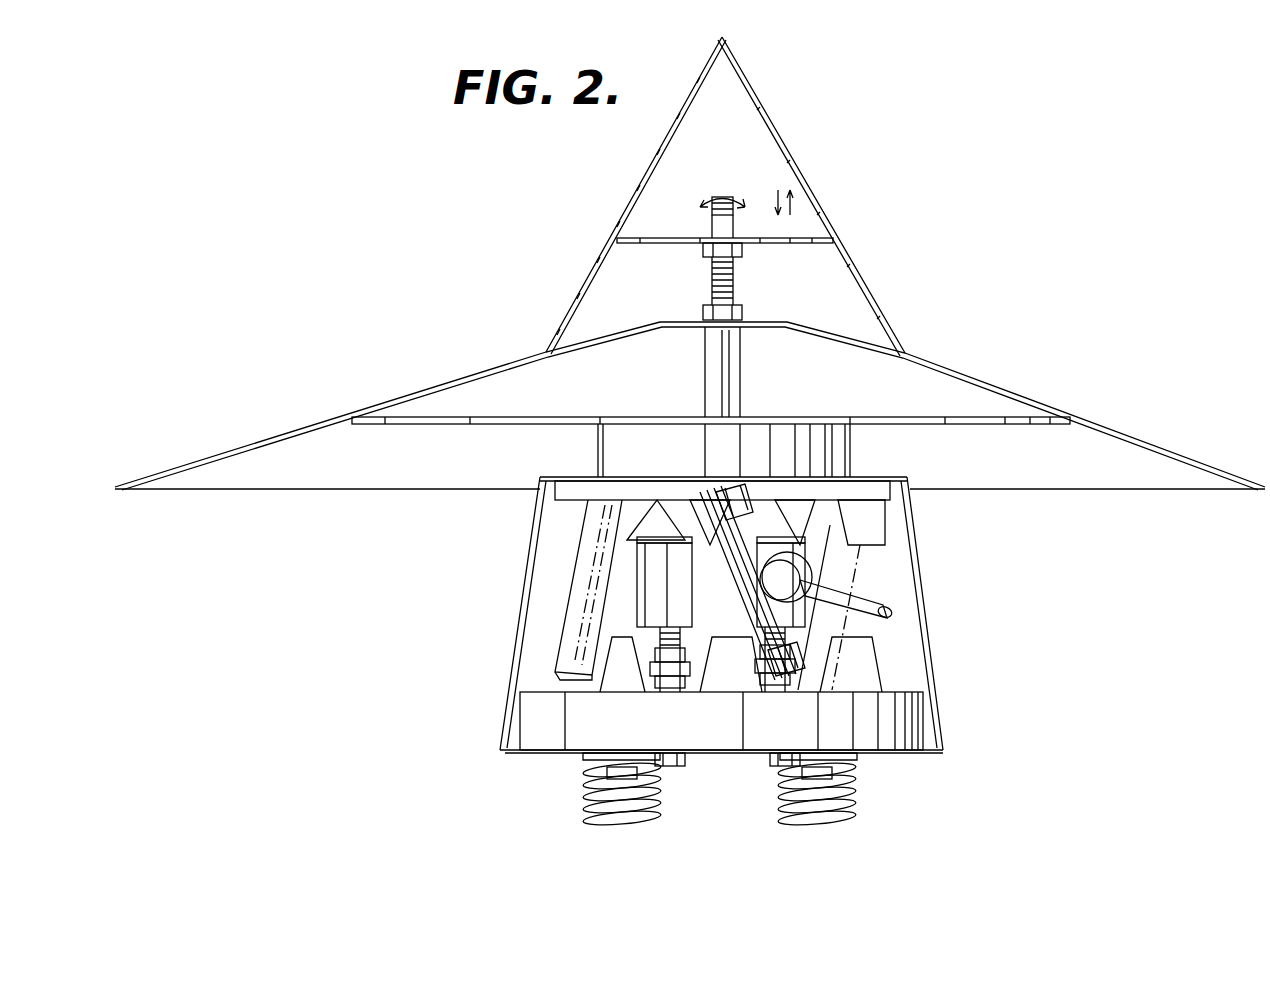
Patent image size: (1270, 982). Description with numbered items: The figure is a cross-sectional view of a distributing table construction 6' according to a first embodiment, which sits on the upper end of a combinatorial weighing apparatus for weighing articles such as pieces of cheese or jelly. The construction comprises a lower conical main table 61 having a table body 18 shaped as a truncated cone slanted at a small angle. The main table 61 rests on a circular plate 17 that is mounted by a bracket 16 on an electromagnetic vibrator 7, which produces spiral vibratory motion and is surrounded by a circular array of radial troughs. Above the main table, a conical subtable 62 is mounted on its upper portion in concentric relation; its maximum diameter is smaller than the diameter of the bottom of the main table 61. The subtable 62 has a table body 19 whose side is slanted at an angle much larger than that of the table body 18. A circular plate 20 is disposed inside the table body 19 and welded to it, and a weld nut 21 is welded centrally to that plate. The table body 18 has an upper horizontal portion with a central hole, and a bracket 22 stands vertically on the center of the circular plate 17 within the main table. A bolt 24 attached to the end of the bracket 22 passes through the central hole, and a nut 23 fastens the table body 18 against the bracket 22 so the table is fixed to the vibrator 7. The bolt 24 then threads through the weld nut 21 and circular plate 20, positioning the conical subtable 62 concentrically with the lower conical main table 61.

The distributing table construction 6' is at (990, 254).
The electromagnetic vibrator 7 is at (938, 592).
The bracket 16 is at (800, 443).
The circular plate 17 is at (1043, 430).
The table body 18 is at (488, 370).
The table body 19 is at (622, 210).
The circular plate 20 is at (808, 248).
The weld nut 21 is at (703, 251).
The bracket 22 is at (730, 372).
The nut 23 is at (742, 313).
The bolt 24 is at (712, 287).
The lower conical main table 61 is at (1020, 392).
The conical subtable 62 is at (818, 198).